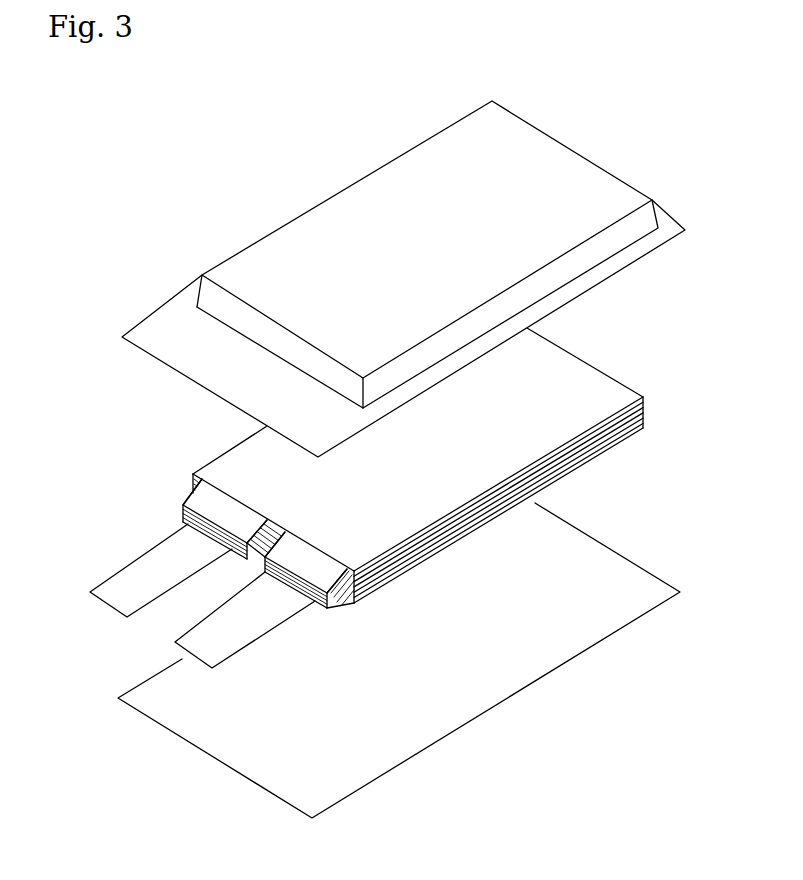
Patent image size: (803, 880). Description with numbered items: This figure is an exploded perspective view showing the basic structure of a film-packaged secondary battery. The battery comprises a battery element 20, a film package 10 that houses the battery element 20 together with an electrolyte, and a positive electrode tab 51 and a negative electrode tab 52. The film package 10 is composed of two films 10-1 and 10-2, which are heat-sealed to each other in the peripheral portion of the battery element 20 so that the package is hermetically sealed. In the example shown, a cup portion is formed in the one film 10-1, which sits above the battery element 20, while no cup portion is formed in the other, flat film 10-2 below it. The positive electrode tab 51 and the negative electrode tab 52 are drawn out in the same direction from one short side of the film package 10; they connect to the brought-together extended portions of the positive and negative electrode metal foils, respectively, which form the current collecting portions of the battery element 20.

The film package 10 is at (414, 450).
The film 10-1 is at (628, 195).
The film 10-2 is at (628, 625).
The battery element 20 is at (602, 358).
The positive electrode tab 51 is at (106, 586).
The negative electrode tab 52 is at (173, 643).